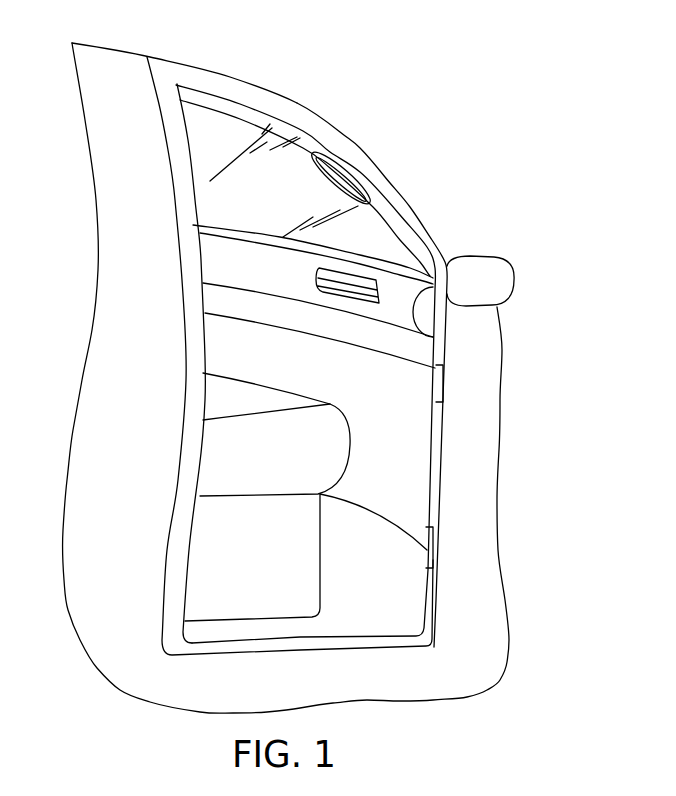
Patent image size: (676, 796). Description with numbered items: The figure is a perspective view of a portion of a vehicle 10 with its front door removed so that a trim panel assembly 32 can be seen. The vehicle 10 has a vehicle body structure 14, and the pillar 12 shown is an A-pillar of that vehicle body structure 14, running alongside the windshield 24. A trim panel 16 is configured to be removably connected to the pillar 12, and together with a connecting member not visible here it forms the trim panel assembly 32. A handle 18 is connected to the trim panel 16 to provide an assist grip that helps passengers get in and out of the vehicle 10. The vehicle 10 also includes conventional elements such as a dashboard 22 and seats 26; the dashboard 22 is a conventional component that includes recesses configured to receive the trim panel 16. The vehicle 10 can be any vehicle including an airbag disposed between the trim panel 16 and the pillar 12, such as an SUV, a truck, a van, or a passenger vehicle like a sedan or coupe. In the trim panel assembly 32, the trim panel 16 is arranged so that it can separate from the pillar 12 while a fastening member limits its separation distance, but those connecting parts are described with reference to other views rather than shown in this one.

The vehicle 10 is at (468, 140).
The pillar 12 is at (344, 129).
The vehicle body structure 14 is at (118, 45).
The trim panel 16 is at (387, 225).
The handle 18 is at (330, 178).
The dashboard 22 is at (260, 270).
The windshield 24 is at (223, 138).
The seats 26 is at (308, 448).
The trim panel assembly 32 is at (211, 113).